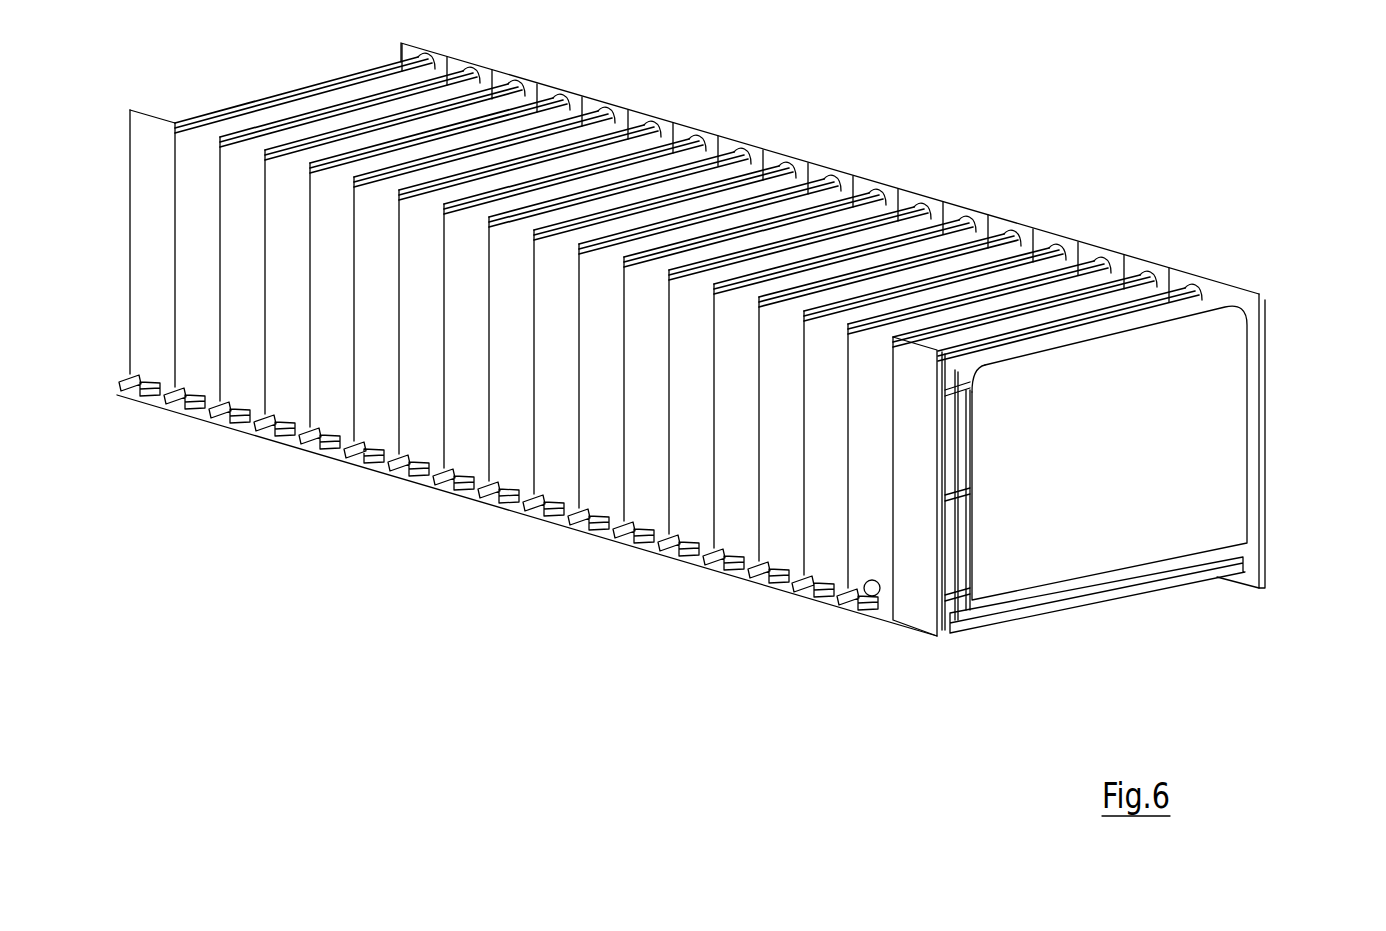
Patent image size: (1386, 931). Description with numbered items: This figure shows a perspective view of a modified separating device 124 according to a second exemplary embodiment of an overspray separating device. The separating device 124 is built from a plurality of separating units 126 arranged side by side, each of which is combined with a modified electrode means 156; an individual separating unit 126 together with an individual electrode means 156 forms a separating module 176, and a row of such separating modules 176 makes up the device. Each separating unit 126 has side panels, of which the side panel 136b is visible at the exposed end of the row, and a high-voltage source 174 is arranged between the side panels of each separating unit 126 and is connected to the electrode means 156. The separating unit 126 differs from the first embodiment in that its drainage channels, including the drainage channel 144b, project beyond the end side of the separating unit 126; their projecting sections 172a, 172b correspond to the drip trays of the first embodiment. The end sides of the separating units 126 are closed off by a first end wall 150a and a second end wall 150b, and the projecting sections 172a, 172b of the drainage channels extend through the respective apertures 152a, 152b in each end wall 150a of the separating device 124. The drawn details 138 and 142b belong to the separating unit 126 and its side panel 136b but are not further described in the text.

The separating device 124 is at (921, 142).
The separating module 176 is at (746, 193).
The electrode means 156 is at (1073, 324).
The rolled plate end 138 is at (1178, 320).
The separating unit 126 is at (1207, 355).
The first end wall 150a is at (913, 563).
The second end wall 150b is at (1255, 352).
The rounded corner 142b is at (1148, 422).
The side panel 136b is at (1196, 473).
The drainage channel 144b is at (1113, 593).
The high-voltage source 174 is at (967, 562).
The projecting section 172a is at (937, 632).
The projecting section 172b is at (950, 628).
The aperture 152a is at (790, 578).
The aperture 152b is at (873, 603).